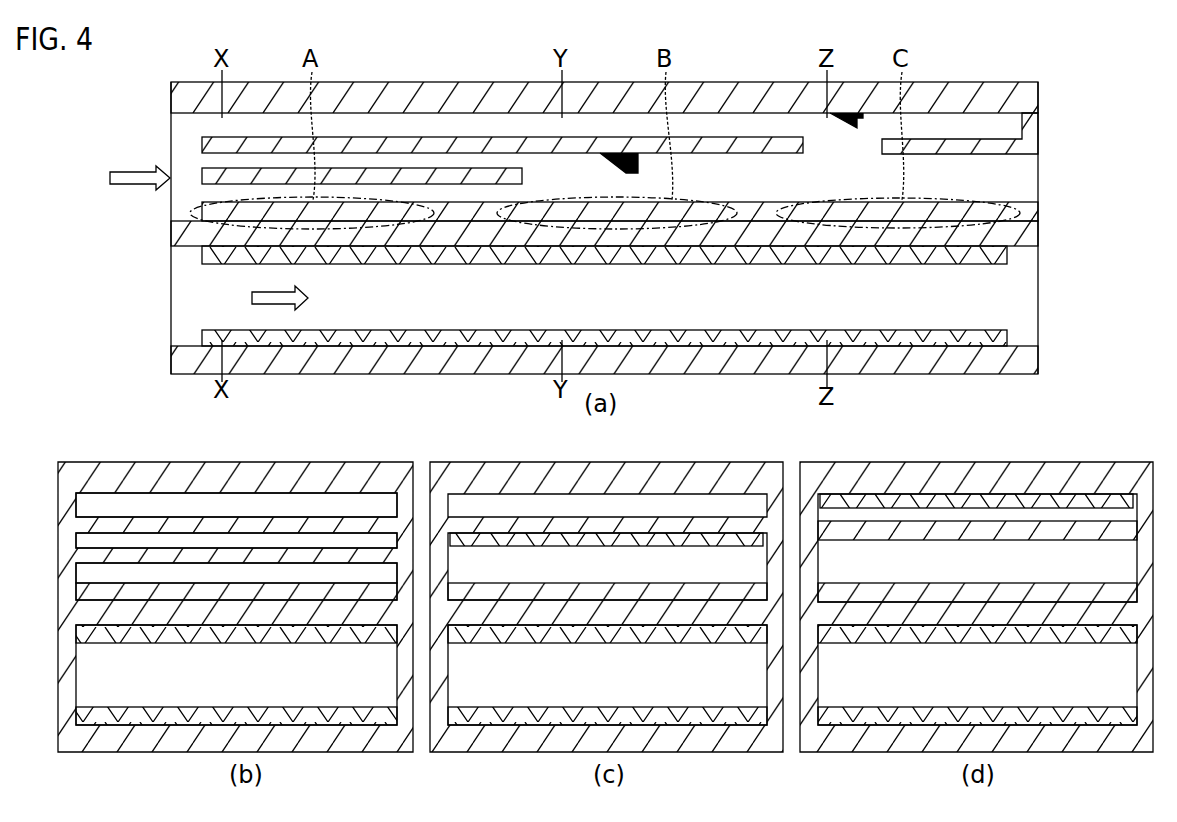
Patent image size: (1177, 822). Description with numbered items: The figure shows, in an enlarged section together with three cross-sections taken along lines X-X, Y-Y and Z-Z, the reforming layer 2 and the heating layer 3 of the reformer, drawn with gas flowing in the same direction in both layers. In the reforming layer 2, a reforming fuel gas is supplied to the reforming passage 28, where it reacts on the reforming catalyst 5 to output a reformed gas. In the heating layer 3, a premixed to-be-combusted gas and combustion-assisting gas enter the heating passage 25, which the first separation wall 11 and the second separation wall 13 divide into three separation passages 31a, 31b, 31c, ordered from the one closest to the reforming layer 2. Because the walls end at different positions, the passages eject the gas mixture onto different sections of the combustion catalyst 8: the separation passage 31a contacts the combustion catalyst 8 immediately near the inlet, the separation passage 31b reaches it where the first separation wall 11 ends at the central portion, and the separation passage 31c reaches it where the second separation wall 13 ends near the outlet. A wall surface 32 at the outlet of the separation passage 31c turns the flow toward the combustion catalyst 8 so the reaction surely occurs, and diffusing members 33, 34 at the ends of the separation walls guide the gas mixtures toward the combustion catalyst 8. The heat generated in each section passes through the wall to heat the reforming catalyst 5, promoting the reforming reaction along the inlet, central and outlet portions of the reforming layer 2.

The reforming layer 2 is at (1032, 308).
The heating layer 3 is at (735, 172).
The reforming catalyst 5 is at (1007, 256).
The combustion catalyst 8 is at (1005, 210).
The first separation wall 11 is at (408, 178).
The second separation wall 13 is at (493, 145).
The heating passage 25 is at (115, 143).
The reforming passage 28 is at (145, 298).
The separation passage 31a is at (197, 189).
The separation passage 31b is at (198, 160).
The separation passage 31c is at (198, 128).
The wall surface 32 is at (1032, 128).
The diffusing member 33 is at (628, 162).
The diffusing member 34 is at (842, 130).